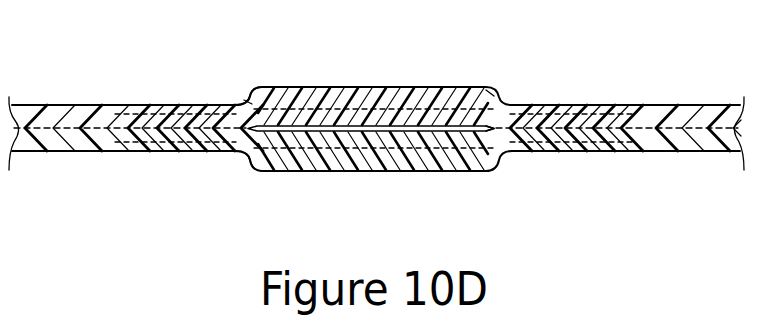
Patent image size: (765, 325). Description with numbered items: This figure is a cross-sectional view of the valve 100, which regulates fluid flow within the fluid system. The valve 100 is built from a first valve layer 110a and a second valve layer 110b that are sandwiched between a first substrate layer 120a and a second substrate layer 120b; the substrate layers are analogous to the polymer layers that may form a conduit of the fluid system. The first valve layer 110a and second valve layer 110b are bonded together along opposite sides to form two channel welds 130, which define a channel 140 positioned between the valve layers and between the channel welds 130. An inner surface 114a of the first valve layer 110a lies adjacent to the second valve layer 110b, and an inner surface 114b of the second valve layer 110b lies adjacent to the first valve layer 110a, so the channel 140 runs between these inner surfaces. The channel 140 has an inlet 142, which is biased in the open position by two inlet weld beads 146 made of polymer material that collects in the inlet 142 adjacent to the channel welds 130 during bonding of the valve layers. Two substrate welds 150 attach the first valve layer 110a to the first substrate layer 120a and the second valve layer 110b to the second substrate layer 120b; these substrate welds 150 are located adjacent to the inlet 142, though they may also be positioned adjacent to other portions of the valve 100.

The valve 100 is at (412, 100).
The first valve layer 110a is at (286, 106).
The second valve layer 110b is at (283, 150).
The inner surface 114a is at (312, 120).
The inner surface 114b is at (341, 140).
The first substrate layer 120a is at (258, 103).
The second substrate layer 120b is at (249, 165).
The channel weld 130 is at (168, 132).
The channel 140 is at (472, 133).
The inlet 142 is at (425, 133).
The inlet weld bead 146 is at (248, 98).
The substrate weld 150 is at (368, 108).